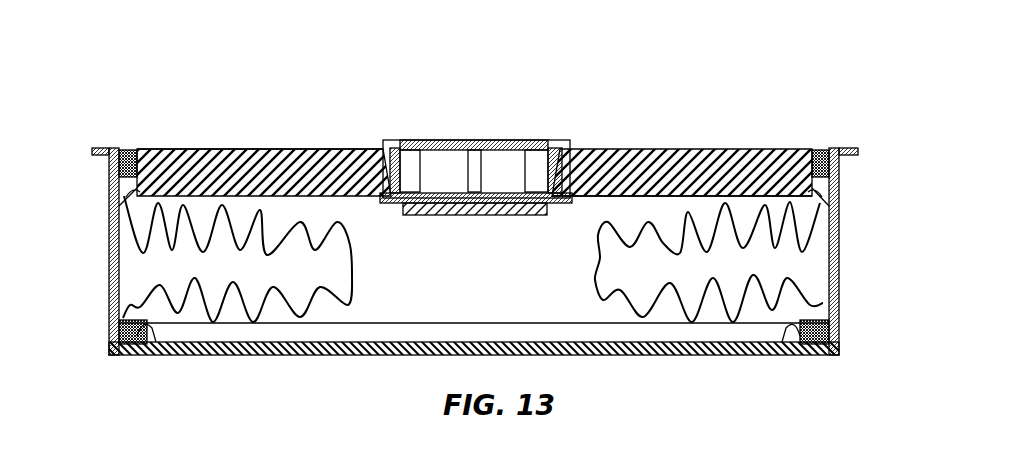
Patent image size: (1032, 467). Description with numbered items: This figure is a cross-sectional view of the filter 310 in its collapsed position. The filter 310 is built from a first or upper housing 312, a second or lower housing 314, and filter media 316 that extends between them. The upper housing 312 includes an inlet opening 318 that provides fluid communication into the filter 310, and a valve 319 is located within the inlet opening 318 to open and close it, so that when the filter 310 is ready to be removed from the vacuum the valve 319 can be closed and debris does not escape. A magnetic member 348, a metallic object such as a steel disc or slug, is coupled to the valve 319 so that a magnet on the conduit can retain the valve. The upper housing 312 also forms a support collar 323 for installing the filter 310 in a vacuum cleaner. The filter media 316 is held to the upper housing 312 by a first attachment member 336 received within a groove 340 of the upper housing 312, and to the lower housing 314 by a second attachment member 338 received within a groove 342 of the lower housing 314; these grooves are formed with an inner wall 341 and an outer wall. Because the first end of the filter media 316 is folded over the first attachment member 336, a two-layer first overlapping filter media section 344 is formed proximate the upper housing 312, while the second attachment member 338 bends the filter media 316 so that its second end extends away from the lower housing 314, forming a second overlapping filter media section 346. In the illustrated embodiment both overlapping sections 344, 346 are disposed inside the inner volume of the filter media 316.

The filter 310 is at (256, 80).
The upper housing 312 is at (648, 162).
The lower housing 314 is at (648, 357).
The filter media 316 is at (352, 250).
The inlet opening 318 is at (520, 214).
The valve 319 is at (410, 157).
The support collar 323 is at (92, 151).
The first attachment member 336 is at (120, 202).
The second attachment member 338 is at (118, 321).
The groove 340 is at (118, 196).
The inner wall 341 is at (176, 200).
The groove 342 is at (135, 352).
The first overlapping filter media section 344 is at (776, 190).
The second overlapping filter media section 346 is at (165, 335).
The magnetic member 348 is at (467, 212).